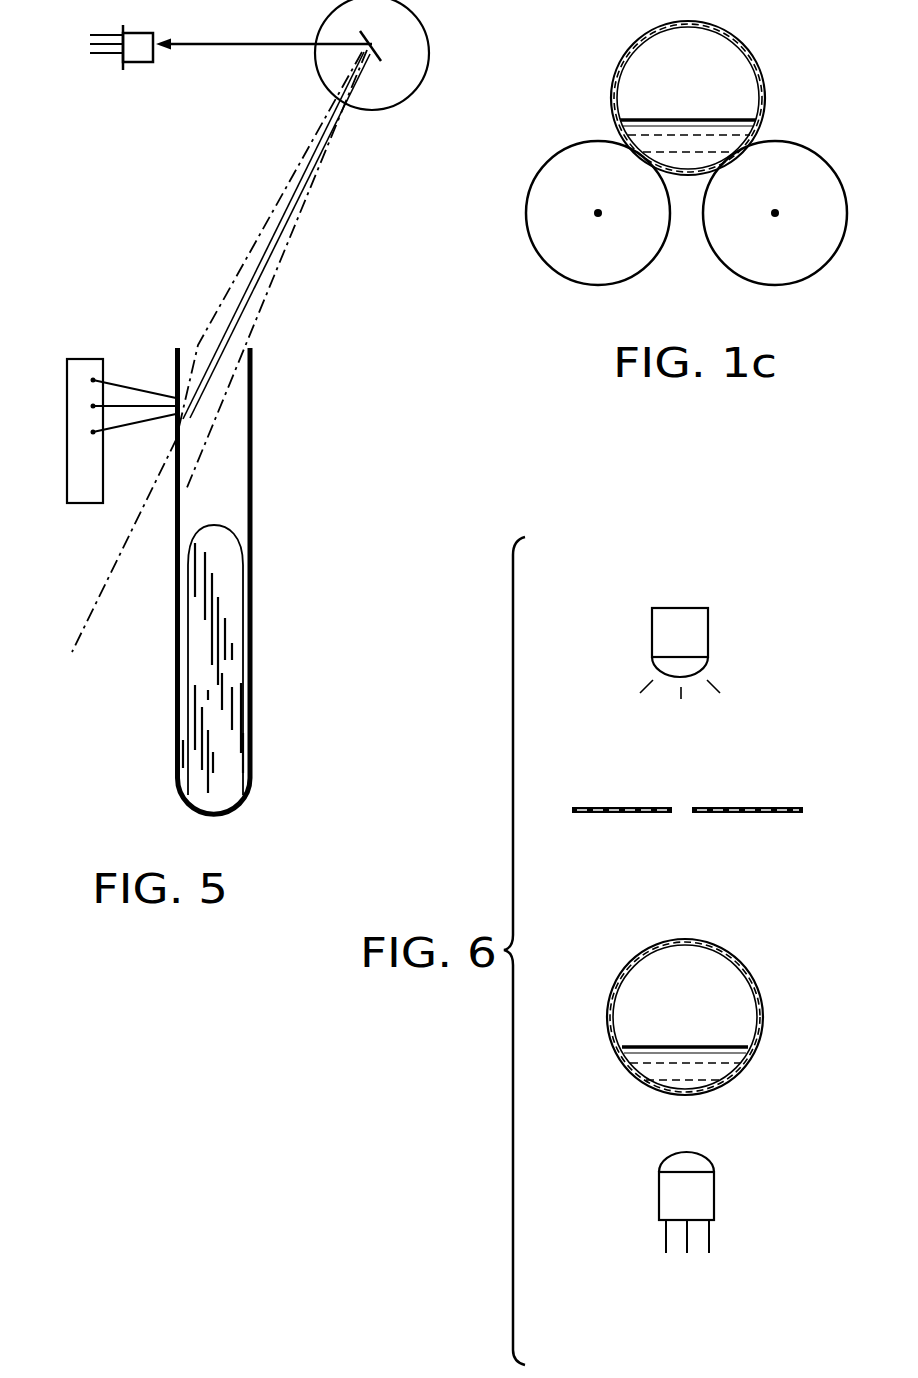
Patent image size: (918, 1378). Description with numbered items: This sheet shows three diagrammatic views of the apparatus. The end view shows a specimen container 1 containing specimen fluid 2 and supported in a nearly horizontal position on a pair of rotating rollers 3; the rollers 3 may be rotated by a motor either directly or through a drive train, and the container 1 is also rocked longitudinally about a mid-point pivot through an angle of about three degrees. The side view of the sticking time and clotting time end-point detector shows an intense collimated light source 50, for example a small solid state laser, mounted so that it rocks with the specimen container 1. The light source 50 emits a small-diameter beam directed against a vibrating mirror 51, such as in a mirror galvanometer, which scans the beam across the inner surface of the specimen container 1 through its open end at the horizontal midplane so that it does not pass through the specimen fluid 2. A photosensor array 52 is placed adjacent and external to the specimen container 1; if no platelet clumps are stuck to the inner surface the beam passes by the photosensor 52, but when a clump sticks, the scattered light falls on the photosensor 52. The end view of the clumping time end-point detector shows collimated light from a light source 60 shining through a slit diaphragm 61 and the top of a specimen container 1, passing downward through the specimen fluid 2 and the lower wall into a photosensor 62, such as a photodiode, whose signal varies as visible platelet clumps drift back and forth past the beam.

In FIG. 5, the specimen container 1 is at (177, 750).
In FIG. 1c, the specimen container 1 is at (619, 65).
In FIG. 6, the specimen container 1 is at (742, 968).
In FIG. 5, the specimen fluid 2 is at (236, 616).
In FIG. 1c, the specimen fluid 2 is at (705, 118).
In FIG. 6, the specimen fluid 2 is at (708, 1058).
In FIG. 1c, the rotating rollers 3 is at (532, 195).
In FIG. 5, the collimated light source 50 is at (173, 44).
In FIG. 5, the vibrating mirror 51 is at (377, 49).
In FIG. 5, the photosensor array 52 is at (67, 418).
In FIG. 6, the light source 60 is at (700, 637).
In FIG. 6, the slit diaphragm 61 is at (763, 807).
In FIG. 6, the photosensor 62 is at (706, 1184).